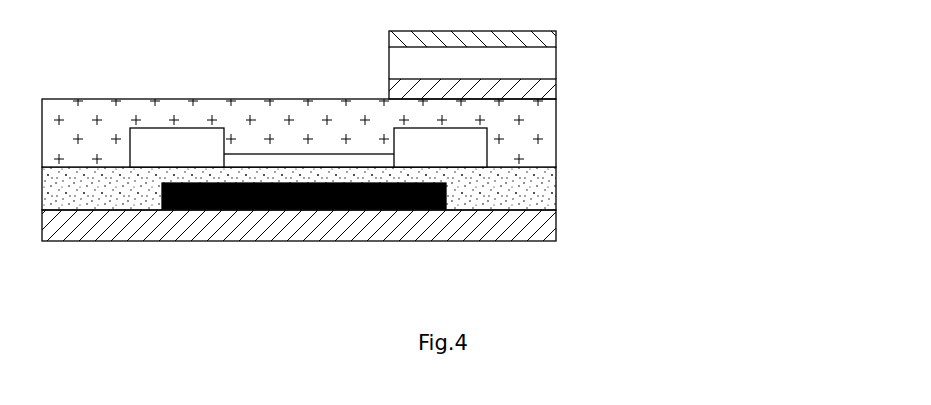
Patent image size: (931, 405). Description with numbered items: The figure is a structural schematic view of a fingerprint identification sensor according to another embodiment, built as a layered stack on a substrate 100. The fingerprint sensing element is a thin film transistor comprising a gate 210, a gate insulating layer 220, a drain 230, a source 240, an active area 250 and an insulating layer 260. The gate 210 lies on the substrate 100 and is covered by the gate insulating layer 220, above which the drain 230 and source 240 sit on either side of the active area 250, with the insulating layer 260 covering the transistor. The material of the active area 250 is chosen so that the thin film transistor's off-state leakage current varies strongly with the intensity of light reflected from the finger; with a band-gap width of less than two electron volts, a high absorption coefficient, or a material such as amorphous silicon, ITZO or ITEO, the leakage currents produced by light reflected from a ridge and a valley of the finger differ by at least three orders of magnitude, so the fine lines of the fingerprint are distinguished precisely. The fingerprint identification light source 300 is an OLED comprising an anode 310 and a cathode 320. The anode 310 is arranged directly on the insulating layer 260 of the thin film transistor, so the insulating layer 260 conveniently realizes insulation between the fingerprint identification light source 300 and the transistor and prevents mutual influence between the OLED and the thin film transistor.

The substrate 100 is at (556, 220).
The gate 210 is at (277, 210).
The gate insulating layer 220 is at (556, 177).
The drain 230 is at (177, 149).
The source 240 is at (440, 149).
The active area 250 is at (260, 160).
The insulating layer 260 is at (556, 137).
The fingerprint identification light source 300 is at (593, 61).
The anode 310 is at (556, 80).
The cathode 320 is at (556, 33).